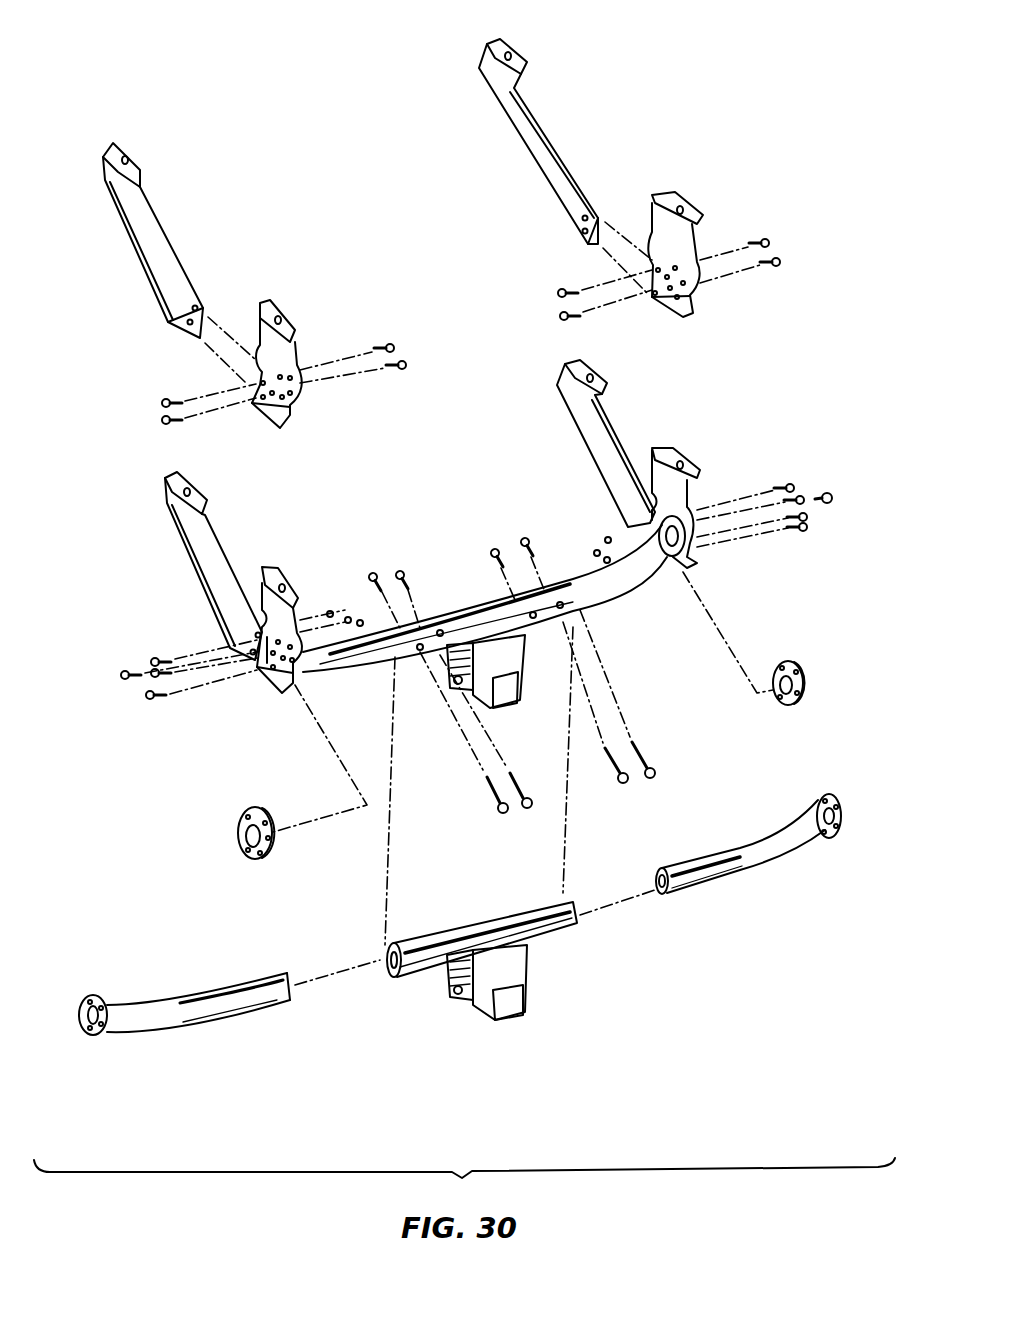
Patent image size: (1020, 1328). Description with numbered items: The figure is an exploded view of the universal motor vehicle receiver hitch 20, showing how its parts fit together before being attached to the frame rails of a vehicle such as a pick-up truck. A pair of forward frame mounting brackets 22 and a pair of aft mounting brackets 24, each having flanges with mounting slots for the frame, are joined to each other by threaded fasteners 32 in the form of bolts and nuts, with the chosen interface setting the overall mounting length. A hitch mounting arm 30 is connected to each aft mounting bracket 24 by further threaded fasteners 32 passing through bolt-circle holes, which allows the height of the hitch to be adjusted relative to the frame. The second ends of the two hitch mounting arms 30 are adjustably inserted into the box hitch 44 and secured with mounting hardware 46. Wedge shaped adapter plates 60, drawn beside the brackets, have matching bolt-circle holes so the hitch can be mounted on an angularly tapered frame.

The universal motor vehicle receiver hitch 20 is at (445, 527).
The forward frame mounting bracket 22 is at (157, 218).
The aft mounting bracket 24 is at (287, 317).
The hitch mounting arm 30 is at (242, 1010).
The threaded fastener 32 is at (165, 402).
The box hitch 44 is at (510, 1017).
The mounting hardware 46 is at (397, 573).
The wedge shaped adapter plate 60 is at (235, 837).